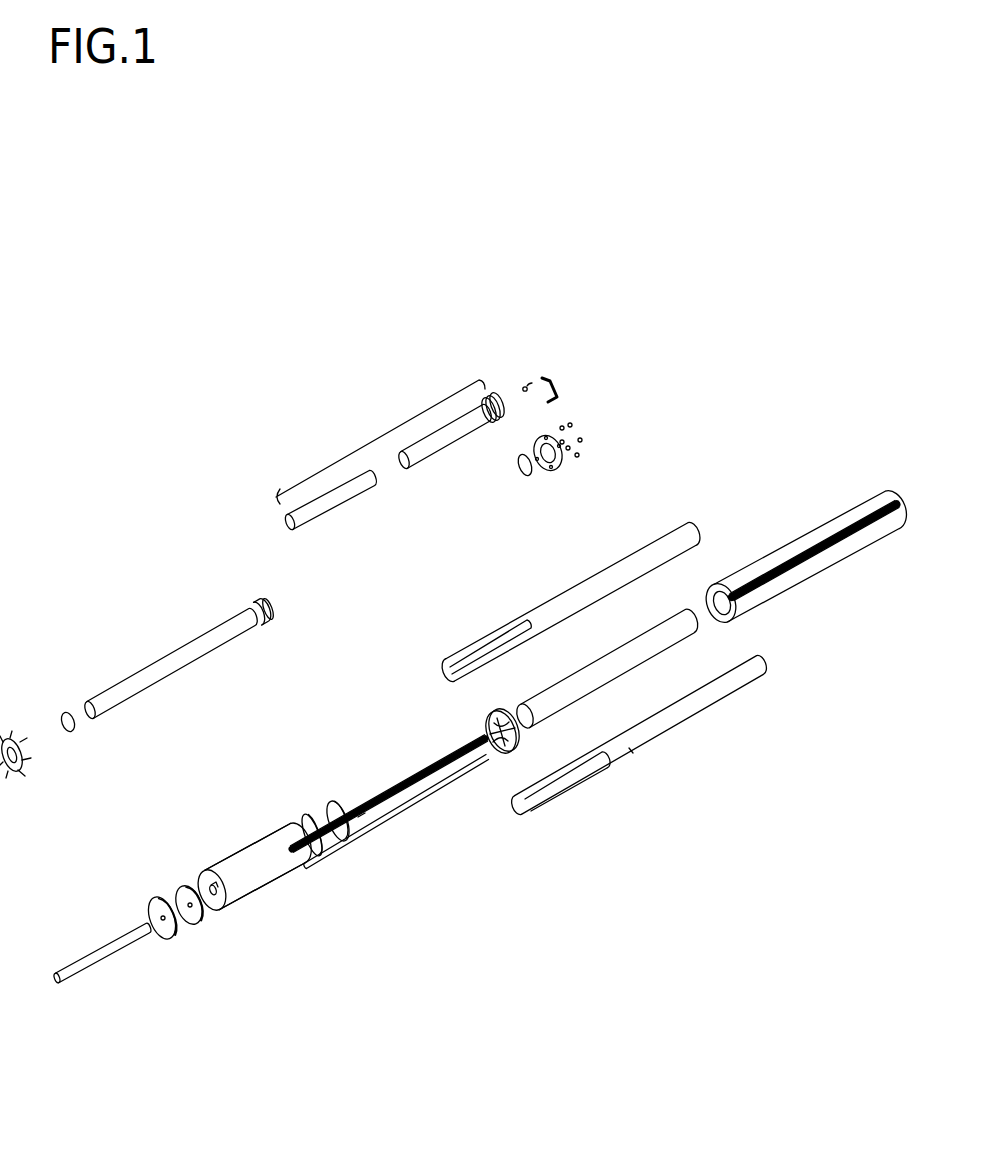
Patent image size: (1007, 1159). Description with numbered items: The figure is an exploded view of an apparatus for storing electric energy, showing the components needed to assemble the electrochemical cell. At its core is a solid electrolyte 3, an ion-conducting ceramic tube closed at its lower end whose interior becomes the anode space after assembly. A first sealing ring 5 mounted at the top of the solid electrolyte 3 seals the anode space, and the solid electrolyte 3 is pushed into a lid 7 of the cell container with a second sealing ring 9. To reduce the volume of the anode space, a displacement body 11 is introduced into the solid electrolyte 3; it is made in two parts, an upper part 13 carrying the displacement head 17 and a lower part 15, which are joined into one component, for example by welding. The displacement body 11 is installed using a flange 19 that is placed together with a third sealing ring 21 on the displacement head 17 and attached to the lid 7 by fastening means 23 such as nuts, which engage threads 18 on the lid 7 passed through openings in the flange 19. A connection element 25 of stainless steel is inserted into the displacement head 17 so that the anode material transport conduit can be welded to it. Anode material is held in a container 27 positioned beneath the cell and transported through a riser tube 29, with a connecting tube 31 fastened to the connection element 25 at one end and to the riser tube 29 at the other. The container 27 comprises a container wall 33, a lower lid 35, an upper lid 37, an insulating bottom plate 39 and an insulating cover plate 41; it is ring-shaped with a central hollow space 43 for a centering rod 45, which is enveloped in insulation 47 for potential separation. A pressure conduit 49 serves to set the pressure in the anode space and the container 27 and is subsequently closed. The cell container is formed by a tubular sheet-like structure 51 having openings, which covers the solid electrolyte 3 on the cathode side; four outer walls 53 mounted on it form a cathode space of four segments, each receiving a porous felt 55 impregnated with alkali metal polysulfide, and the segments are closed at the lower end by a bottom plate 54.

The solid electrolyte 3 is at (173, 660).
The first sealing ring 5 is at (277, 612).
The lid 7 is at (3, 733).
The second sealing ring 9 is at (68, 712).
The displacement body 11 is at (375, 440).
The upper part 13 is at (441, 441).
The lower part 15 is at (325, 506).
The displacement head 17 is at (497, 397).
The threads 18 is at (30, 744).
The flange 19 is at (556, 471).
The third sealing ring 21 is at (526, 478).
The fastening means 23 is at (582, 453).
The connection element 25 is at (526, 386).
The container for anode material 27 is at (263, 880).
The riser tube 29 is at (397, 812).
The connecting tube 31 is at (552, 387).
The container wall 33 is at (245, 847).
The lower lid 35 is at (200, 923).
The upper lid 37 is at (307, 815).
The insulating bottom plate 39 is at (152, 903).
The insulating cover plate 41 is at (333, 806).
The central hollow space 43 is at (193, 883).
The centering rod 45 is at (420, 772).
The insulation 47 is at (80, 963).
The pressure conduit 49 is at (366, 800).
The sheet-like structure having openings 51 is at (687, 630).
The outer walls 53 is at (475, 645).
The bottom plate 54 is at (497, 748).
The porous felt 55 is at (862, 542).